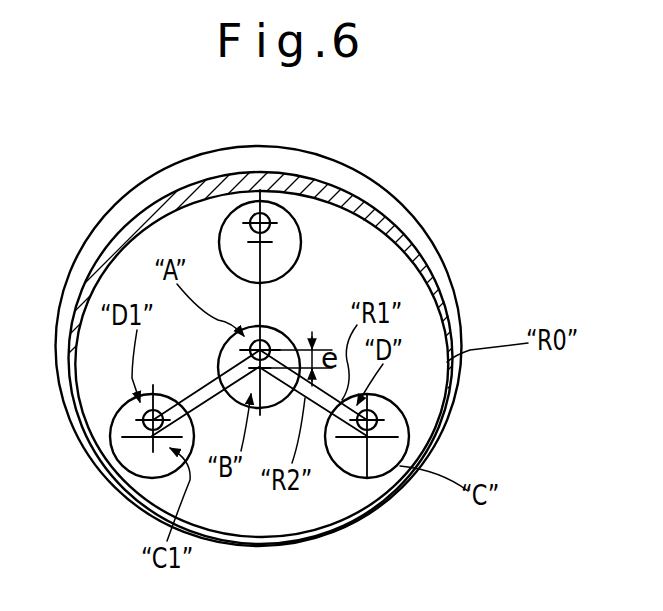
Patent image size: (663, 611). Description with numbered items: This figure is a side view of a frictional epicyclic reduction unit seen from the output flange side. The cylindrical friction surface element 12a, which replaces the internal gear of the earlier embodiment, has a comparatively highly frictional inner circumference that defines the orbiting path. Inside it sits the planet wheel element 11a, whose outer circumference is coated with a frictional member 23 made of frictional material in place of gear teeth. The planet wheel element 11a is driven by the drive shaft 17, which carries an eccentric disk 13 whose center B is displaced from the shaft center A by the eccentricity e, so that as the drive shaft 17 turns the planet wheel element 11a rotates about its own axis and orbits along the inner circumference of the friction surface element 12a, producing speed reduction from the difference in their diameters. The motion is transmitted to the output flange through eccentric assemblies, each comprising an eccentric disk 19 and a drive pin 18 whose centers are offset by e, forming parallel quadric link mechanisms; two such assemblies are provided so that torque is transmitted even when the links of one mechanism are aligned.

The planet wheel element 11a is at (443, 264).
The cylindrical friction surface element 12a is at (412, 212).
The frictional member 23 is at (355, 207).
The drive shaft 17 is at (268, 336).
The eccentric disk 13 is at (283, 343).
The drive pin 18 is at (258, 213).
The eccentric disk 19 is at (220, 232).